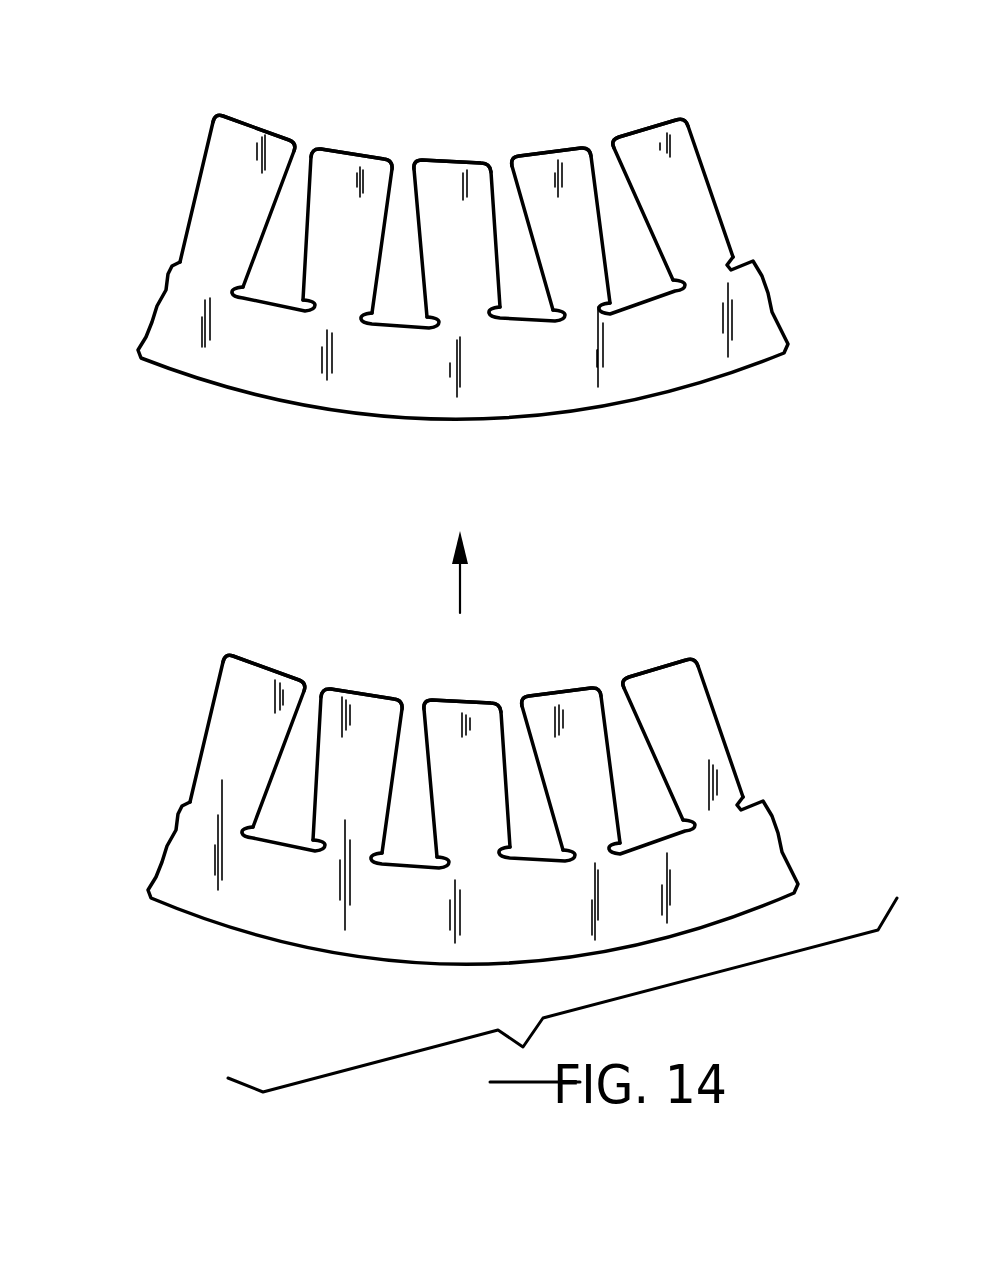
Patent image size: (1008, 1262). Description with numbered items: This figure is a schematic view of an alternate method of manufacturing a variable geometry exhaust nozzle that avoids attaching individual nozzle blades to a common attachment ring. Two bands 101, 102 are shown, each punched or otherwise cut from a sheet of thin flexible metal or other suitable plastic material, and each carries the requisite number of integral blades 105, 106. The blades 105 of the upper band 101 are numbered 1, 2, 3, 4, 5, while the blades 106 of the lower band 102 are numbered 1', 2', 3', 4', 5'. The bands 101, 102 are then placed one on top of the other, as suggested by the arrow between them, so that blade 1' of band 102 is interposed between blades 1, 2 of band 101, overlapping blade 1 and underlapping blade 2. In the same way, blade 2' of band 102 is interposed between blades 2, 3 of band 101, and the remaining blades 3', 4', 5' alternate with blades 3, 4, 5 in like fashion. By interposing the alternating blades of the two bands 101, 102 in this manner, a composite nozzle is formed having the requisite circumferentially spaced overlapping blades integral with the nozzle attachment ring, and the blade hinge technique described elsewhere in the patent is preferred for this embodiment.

The band 101 is at (132, 319).
The band 102 is at (792, 853).
The integral blades 105 is at (440, 160).
The integral blades 106 is at (458, 697).
The blade 1 is at (237, 201).
The blade 2 is at (347, 231).
The blade 3 is at (457, 238).
The blade 4 is at (561, 229).
The blade 5 is at (673, 199).
The blade 1' is at (247, 741).
The blade 2' is at (357, 771).
The blade 3' is at (467, 778).
The blade 4' is at (571, 769).
The blade 5' is at (683, 739).